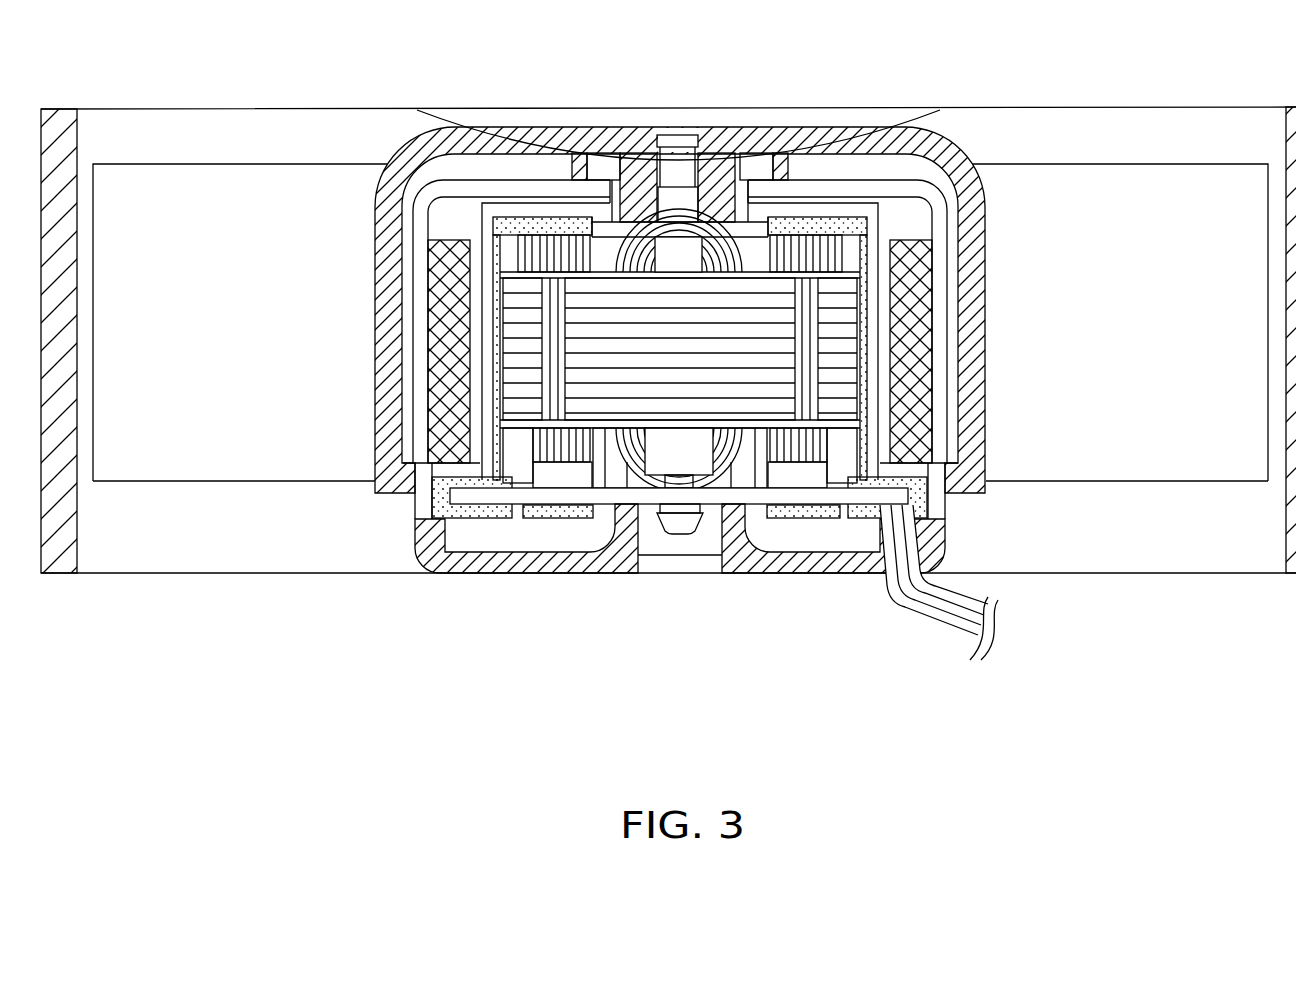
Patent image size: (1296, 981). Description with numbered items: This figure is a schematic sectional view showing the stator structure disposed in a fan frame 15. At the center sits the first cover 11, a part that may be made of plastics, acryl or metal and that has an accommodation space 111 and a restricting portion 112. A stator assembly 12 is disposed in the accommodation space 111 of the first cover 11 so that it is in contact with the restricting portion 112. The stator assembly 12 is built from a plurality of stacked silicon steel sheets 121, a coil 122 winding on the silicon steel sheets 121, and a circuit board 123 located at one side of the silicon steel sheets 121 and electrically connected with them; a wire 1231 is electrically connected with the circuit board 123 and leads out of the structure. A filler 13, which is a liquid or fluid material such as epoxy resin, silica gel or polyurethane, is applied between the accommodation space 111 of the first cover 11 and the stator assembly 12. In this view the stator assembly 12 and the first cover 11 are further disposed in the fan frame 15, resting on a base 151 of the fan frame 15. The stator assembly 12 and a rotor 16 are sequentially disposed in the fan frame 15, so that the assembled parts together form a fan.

The first cover 11 is at (485, 361).
The accommodation space 111 is at (500, 232).
The restricting portion 112 is at (634, 215).
The stator assembly 12 is at (1088, 262).
The silicon steel sheets 121 is at (845, 335).
The coil 122 is at (833, 256).
The circuit board 123 is at (985, 445).
The wire 1231 is at (967, 607).
The filler 13 is at (800, 225).
The fan frame 15 is at (57, 128).
The base 151 is at (595, 563).
The rotor 16 is at (732, 150).